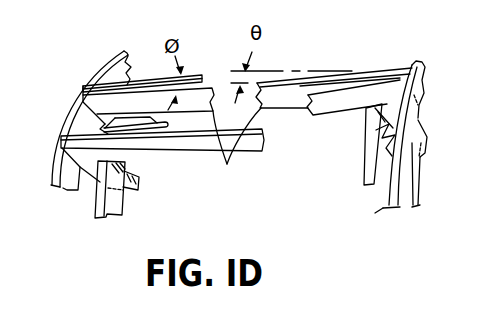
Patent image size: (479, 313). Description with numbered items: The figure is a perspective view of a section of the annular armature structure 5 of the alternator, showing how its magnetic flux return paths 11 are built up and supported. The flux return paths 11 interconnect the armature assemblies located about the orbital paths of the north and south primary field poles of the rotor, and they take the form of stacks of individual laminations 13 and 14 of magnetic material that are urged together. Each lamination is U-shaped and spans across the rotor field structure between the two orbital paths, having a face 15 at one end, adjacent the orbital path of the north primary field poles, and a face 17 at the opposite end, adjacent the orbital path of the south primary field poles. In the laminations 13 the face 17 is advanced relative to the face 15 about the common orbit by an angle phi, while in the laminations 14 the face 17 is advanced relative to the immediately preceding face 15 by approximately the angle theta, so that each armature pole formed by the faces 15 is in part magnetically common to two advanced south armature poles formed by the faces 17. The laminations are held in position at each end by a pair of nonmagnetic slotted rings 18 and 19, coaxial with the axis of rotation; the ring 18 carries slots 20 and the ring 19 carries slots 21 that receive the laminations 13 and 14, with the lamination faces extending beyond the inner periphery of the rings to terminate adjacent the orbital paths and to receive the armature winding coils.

The armature structure 5 is at (100, 59).
The magnetic flux return paths 11 is at (139, 69).
The laminations 13 is at (197, 74).
The laminations 14 is at (237, 149).
The face 15 is at (139, 191).
The face 17 is at (419, 148).
The slotted ring 18 is at (60, 108).
The slotted ring 19 is at (120, 214).
The slots 20 is at (83, 90).
The slots 21 is at (376, 139).